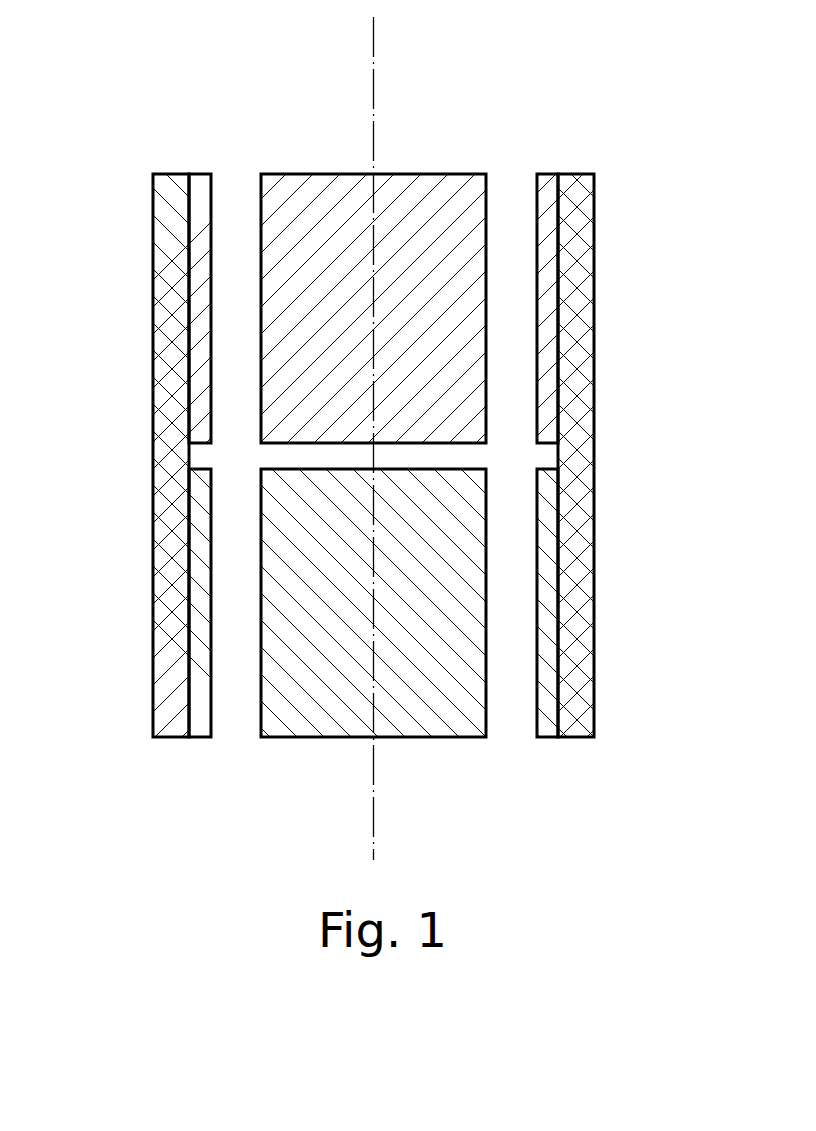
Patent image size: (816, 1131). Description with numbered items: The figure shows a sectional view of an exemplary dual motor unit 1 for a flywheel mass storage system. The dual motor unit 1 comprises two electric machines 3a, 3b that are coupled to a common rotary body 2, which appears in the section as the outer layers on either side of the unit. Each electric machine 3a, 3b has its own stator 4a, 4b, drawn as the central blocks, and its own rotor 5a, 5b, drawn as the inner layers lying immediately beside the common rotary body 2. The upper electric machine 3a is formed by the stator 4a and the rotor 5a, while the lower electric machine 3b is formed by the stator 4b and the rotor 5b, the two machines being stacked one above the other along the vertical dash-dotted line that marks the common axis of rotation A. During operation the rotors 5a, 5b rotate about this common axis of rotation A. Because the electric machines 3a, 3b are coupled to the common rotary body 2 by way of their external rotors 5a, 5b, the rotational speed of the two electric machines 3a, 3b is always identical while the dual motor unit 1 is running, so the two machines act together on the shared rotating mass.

The dual motor unit 1 is at (607, 130).
The common rotary body 2 is at (168, 713).
The electric machine 3a is at (486, 174).
The electric machine 3b is at (245, 482).
The stator 4a is at (425, 174).
The stator 4b is at (272, 553).
The rotor 5a is at (205, 174).
The rotor 5b is at (193, 598).
The axis of rotation A is at (374, 42).